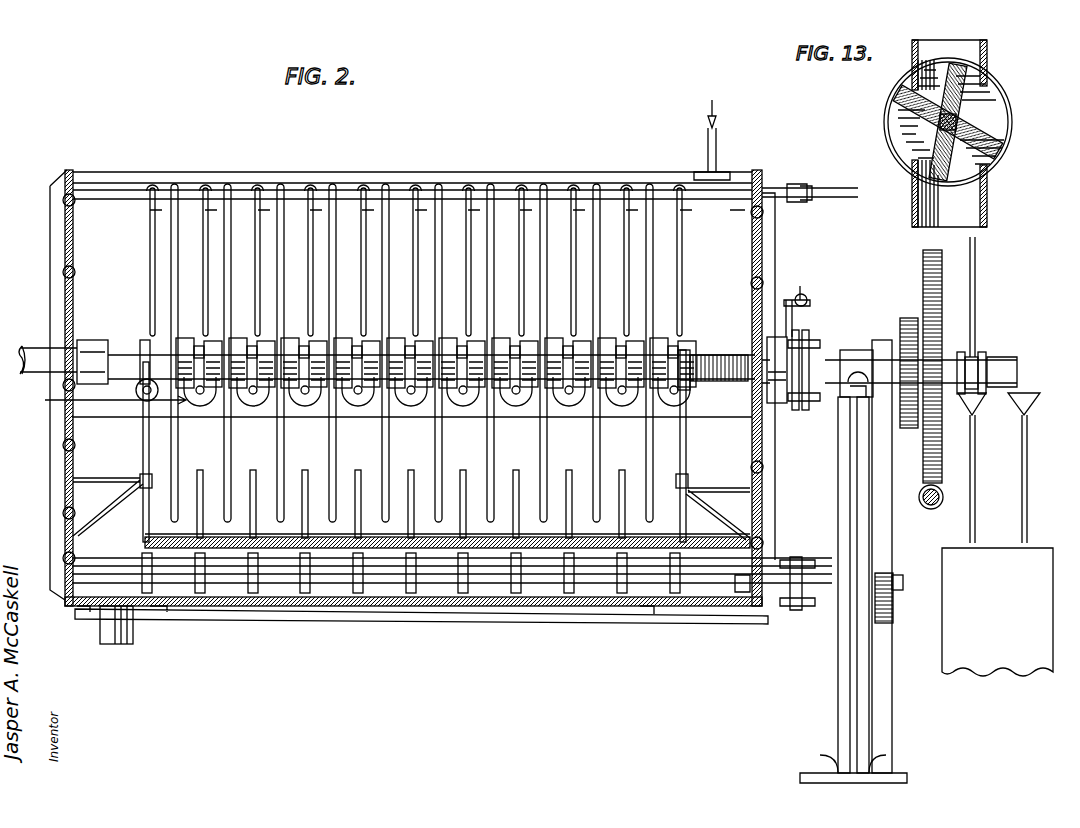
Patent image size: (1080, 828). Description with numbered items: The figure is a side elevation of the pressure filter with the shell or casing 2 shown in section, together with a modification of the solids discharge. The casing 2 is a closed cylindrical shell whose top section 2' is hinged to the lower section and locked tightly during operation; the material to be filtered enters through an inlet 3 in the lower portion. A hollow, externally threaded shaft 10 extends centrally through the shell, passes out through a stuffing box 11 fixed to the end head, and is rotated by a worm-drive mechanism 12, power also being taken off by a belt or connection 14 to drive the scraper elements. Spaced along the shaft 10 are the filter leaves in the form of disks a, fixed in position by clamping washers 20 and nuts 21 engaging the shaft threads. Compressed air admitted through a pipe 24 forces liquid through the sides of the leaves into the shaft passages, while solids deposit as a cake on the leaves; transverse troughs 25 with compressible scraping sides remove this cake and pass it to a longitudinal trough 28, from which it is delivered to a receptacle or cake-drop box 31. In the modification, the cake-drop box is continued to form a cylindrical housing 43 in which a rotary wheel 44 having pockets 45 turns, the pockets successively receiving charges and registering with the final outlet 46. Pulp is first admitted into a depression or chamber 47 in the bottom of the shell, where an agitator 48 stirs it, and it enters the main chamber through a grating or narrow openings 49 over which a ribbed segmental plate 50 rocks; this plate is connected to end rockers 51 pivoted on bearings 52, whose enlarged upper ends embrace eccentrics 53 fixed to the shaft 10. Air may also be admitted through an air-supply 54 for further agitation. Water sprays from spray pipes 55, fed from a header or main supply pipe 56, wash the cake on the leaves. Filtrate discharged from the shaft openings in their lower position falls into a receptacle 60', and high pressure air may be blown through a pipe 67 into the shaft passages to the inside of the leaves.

In FIG. 2, the shell or casing 2 is at (391, 388).
In FIG. 2, the top section of the shell 2' is at (412, 169).
In FIG. 2, the inlet 3 is at (116, 646).
In FIG. 2, the hollow shaft 10 is at (736, 382).
In FIG. 2, the stuffing box 11 is at (795, 354).
In FIG. 2, the worm-drive mechanism 12 is at (926, 510).
In FIG. 2, the belt or connection 14 is at (900, 326).
In FIG. 2, the clamping washers 20 is at (418, 402).
In FIG. 2, the nuts 21 is at (306, 404).
In FIG. 2, the pipe 24 is at (702, 172).
In FIG. 2, the troughs 25 is at (212, 404).
In FIG. 2, the trough 28 is at (98, 403).
In FIG. 2, the receptacle or cake-drop box 31 is at (382, 447).
In FIG. 13, the cylindrical housing 43 is at (924, 131).
In FIG. 13, the rotary wheel 44 is at (900, 163).
In FIG. 13, the pockets 45 is at (920, 88).
In FIG. 2, the final outlet 46 is at (912, 212).
In FIG. 13, the final outlet 46 is at (949, 133).
In FIG. 2, the depression or chamber 47 is at (498, 592).
In FIG. 2, the agitator 48 is at (300, 582).
In FIG. 2, the grating or narrow openings 49 is at (290, 578).
In FIG. 2, the segmental plate 50 is at (446, 546).
In FIG. 2, the end rockers 51 is at (140, 455).
In FIG. 2, the bearings 52 is at (130, 492).
In FIG. 2, the eccentrics 53 is at (148, 352).
In FIG. 2, the air-supply 54 is at (377, 619).
In FIG. 2, the spray pipes 55 is at (147, 272).
In FIG. 2, the header or main supply pipe 56 is at (497, 182).
In FIG. 2, the receptacle 60' is at (997, 534).
In FIG. 2, the pipe 67 is at (976, 336).
In FIG. 2, the disks a is at (277, 442).